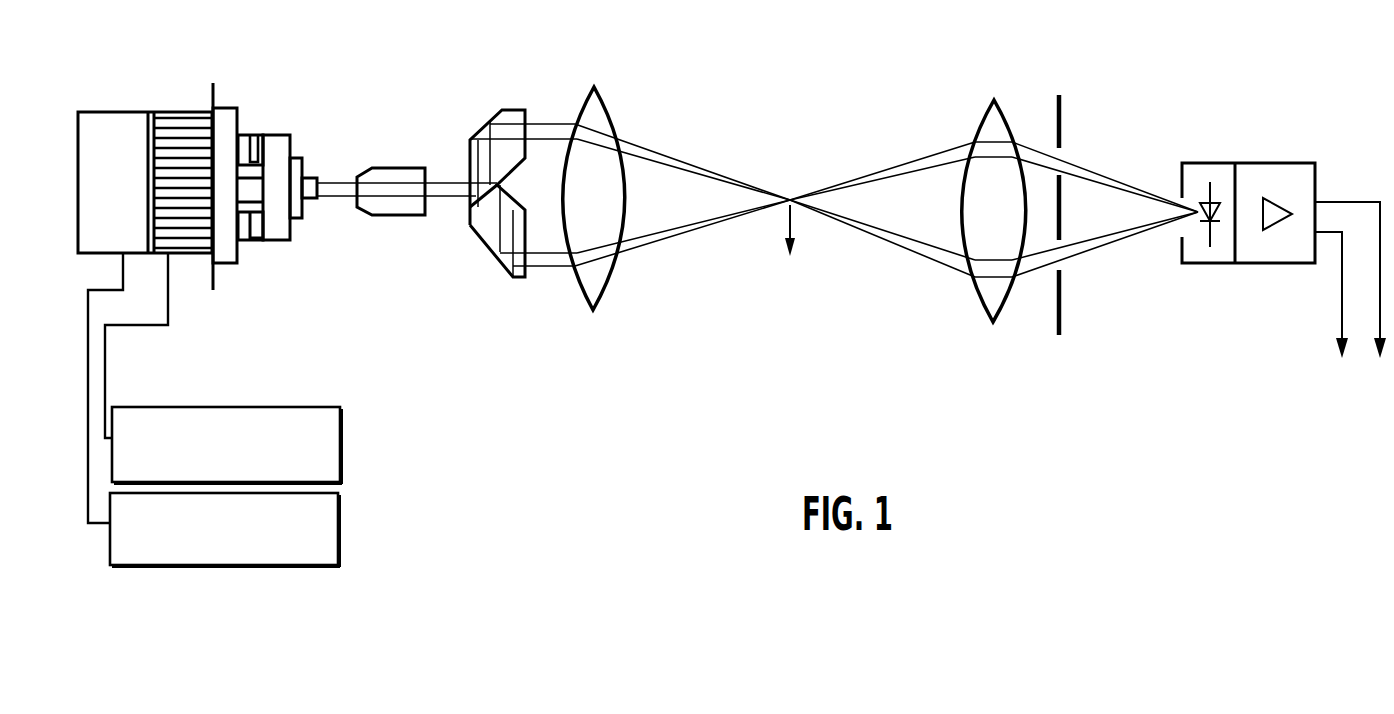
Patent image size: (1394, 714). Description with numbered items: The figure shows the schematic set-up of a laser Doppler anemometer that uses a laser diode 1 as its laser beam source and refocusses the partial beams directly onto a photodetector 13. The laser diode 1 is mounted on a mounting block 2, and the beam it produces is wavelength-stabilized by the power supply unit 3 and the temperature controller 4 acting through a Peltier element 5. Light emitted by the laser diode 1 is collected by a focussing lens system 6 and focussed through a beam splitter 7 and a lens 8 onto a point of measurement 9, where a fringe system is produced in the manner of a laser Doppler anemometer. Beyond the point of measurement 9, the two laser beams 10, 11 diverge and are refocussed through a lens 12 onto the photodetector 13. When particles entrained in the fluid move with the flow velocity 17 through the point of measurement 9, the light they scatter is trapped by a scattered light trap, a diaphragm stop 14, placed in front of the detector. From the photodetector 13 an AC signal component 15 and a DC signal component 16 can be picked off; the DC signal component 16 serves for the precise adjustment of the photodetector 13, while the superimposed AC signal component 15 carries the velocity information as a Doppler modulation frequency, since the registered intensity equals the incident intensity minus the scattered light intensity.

The laser diode 1 is at (313, 173).
The mounting block 2 is at (277, 240).
The power supply unit 3 is at (338, 525).
The temperature controller 4 is at (340, 450).
The Peltier element 5 is at (252, 135).
The focussing lens system 6 is at (416, 217).
The beam splitter 7 is at (513, 278).
The lens 8 is at (602, 98).
The point of measurement 9 is at (790, 196).
The laser beam 10 is at (918, 160).
The laser beam 11 is at (912, 253).
The lens 12 is at (1000, 110).
The photodetector 13 is at (1203, 265).
The scattered light trap (diaphragm stop) 14 is at (1056, 320).
The AC signal component 15 is at (1331, 317).
The DC signal component 16 is at (1353, 302).
The flow velocity 17 is at (783, 234).